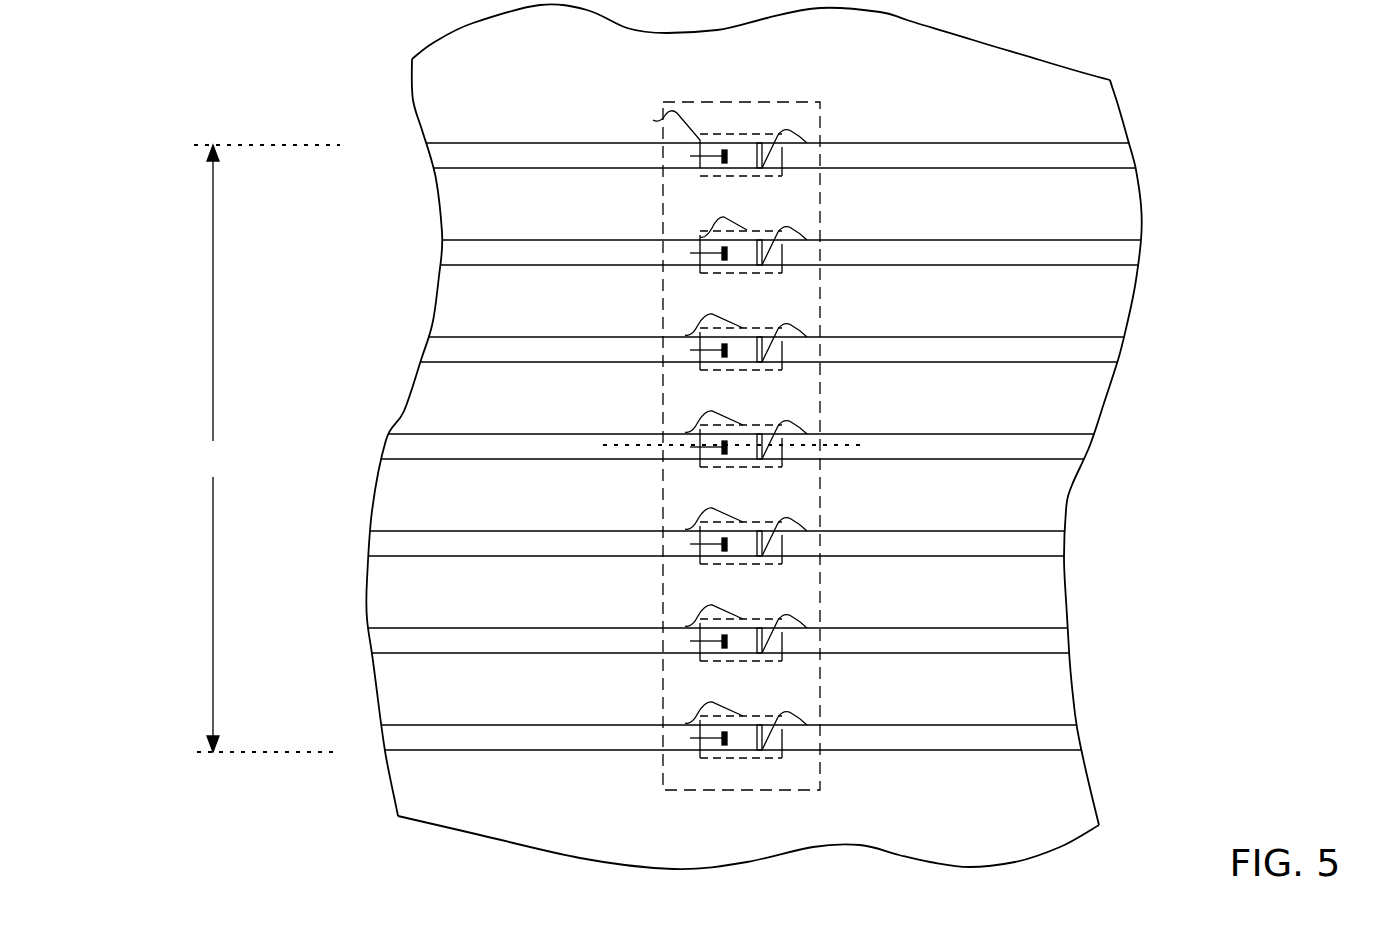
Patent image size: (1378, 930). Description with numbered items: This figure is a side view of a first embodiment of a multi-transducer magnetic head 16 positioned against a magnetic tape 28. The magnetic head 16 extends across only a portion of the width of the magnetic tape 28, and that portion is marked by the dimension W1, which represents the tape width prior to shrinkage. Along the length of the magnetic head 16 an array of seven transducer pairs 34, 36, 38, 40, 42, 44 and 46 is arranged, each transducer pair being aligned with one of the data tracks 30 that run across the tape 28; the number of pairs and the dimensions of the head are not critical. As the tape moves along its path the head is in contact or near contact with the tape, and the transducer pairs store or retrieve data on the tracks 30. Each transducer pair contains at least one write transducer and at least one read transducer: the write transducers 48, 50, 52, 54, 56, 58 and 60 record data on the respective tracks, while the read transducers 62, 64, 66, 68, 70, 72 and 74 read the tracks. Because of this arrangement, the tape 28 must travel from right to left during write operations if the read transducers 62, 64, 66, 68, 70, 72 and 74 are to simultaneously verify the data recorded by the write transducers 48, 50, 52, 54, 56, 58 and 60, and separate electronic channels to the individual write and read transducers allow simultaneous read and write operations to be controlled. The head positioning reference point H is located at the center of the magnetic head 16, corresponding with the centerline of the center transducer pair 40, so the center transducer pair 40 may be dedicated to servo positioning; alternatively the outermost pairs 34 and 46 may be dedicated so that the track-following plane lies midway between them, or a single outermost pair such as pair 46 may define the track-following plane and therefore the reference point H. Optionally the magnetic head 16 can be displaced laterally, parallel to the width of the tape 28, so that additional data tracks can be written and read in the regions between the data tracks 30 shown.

The magnetic head 16 is at (775, 102).
The magnetic tape 28 is at (1083, 767).
The data track 30 is at (1129, 155).
The transducer pair 34 is at (653, 120).
The transducer pair 36 is at (700, 237).
The transducer pair 38 is at (685, 335).
The center transducer pair 40 is at (685, 432).
The transducer pair 42 is at (685, 529).
The transducer pair 44 is at (685, 626).
The transducer pair 46 is at (685, 723).
The write transducer 48 is at (807, 143).
The write transducer 50 is at (807, 240).
The write transducer 52 is at (807, 337).
The write transducer 54 is at (807, 434).
The write transducer 56 is at (807, 531).
The write transducer 58 is at (807, 628).
The write transducer 60 is at (807, 725).
The read transducer 62 is at (690, 156).
The read transducer 64 is at (690, 253).
The read transducer 66 is at (690, 350).
The read transducer 68 is at (690, 447).
The read transducer 70 is at (690, 544).
The read transducer 72 is at (690, 641).
The read transducer 74 is at (690, 738).
The head positioning reference point H is at (863, 445).
The width of the portion of the tape W1 is at (267, 448).